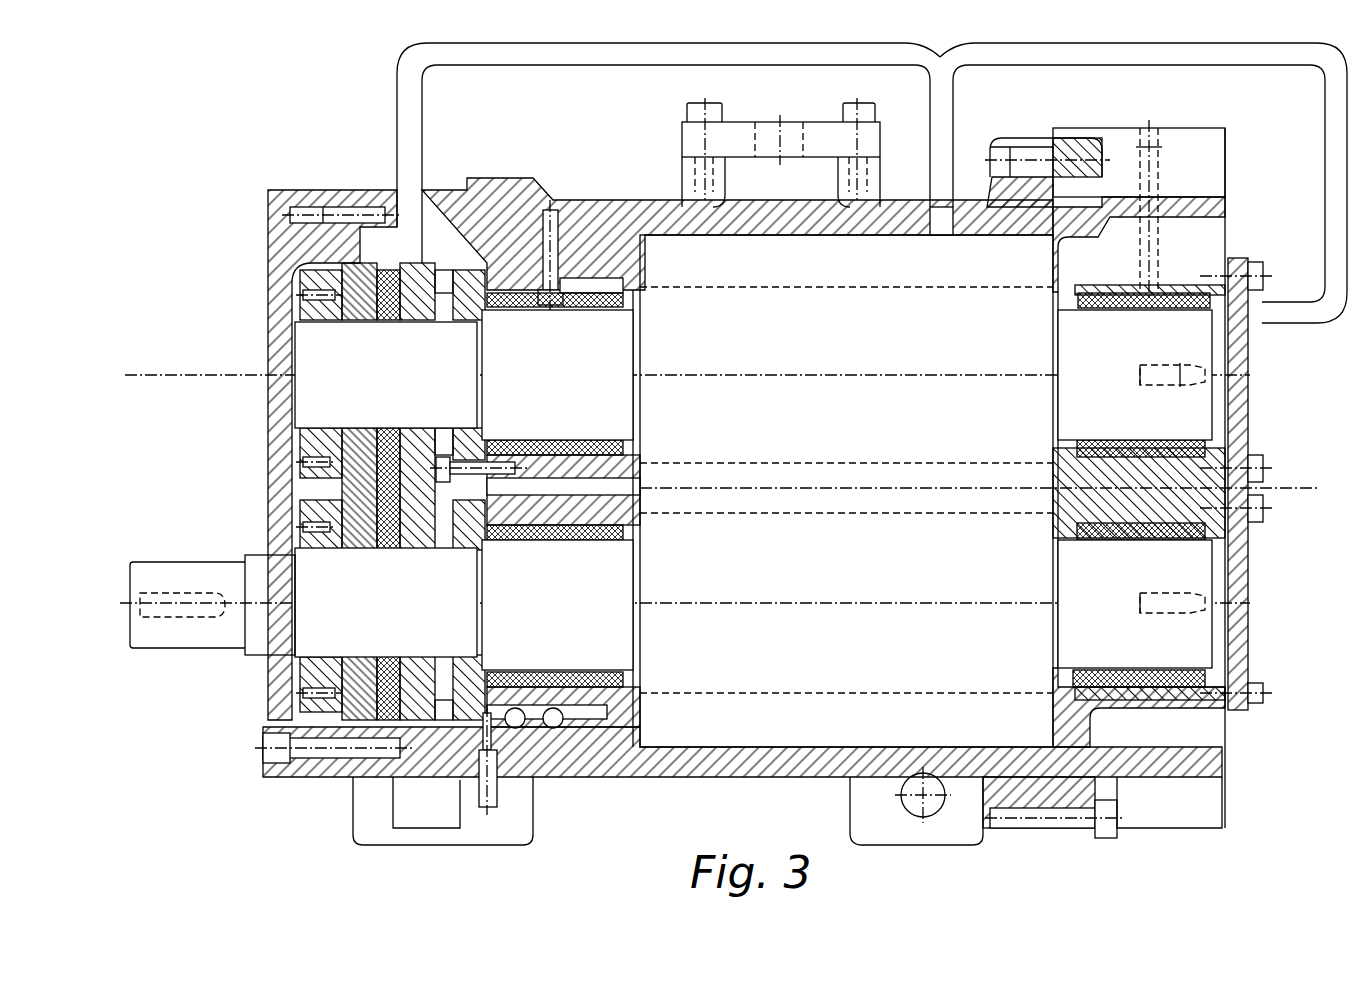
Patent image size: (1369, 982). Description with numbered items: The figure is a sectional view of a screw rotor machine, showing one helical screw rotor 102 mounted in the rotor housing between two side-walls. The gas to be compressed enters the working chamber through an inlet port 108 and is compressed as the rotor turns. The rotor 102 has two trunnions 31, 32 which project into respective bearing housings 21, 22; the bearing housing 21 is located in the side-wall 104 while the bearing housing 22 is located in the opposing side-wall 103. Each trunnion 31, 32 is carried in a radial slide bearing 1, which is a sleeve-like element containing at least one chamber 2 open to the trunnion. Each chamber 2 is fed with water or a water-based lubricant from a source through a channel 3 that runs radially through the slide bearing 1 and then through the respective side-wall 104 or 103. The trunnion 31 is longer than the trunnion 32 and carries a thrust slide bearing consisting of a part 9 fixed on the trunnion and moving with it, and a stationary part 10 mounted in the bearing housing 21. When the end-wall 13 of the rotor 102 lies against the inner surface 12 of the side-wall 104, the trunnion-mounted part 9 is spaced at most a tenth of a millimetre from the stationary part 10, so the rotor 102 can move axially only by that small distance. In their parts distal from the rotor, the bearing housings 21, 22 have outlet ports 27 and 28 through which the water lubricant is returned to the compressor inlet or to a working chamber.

The radial slide bearing 1 is at (587, 283).
The chamber 2 is at (590, 262).
The channel 3 is at (550, 215).
The thrust slide bearing part 9 is at (357, 278).
The stationary thrust bearing part 10 is at (417, 280).
The inner surface 12 is at (652, 263).
The end-wall 13 is at (1053, 283).
The bearing housing 21 is at (317, 260).
The bearing housing 22 is at (1222, 365).
The outlet port 27 is at (415, 122).
The outlet port 28 is at (1337, 250).
The trunnion 31 is at (307, 412).
The trunnion 32 is at (1187, 407).
The rotor 102 is at (737, 351).
The side-wall 103 is at (1162, 533).
The side-wall 104 is at (632, 777).
The inlet port 108 is at (1185, 233).